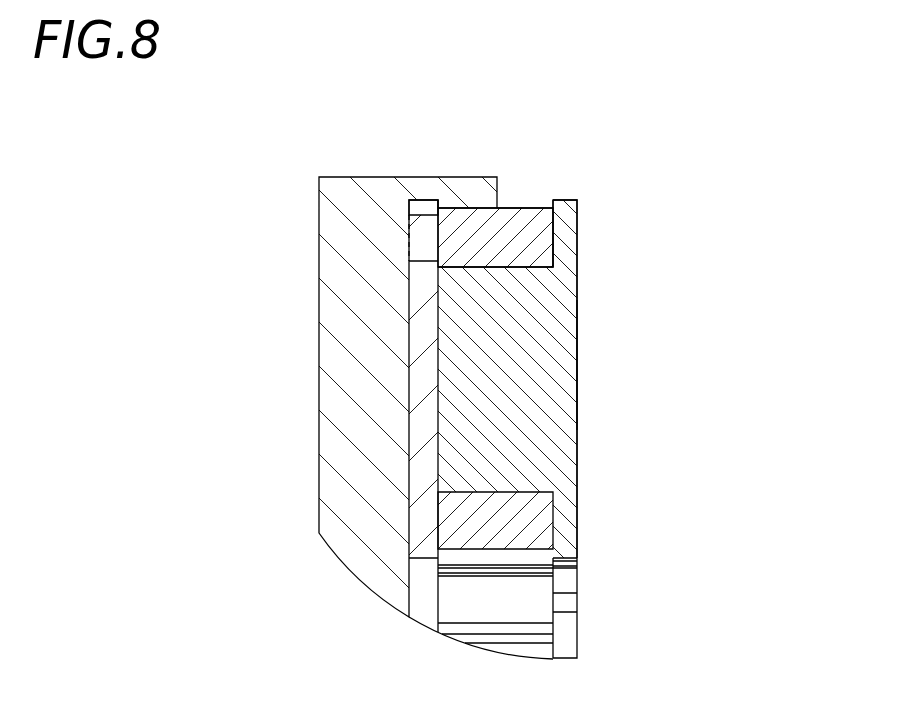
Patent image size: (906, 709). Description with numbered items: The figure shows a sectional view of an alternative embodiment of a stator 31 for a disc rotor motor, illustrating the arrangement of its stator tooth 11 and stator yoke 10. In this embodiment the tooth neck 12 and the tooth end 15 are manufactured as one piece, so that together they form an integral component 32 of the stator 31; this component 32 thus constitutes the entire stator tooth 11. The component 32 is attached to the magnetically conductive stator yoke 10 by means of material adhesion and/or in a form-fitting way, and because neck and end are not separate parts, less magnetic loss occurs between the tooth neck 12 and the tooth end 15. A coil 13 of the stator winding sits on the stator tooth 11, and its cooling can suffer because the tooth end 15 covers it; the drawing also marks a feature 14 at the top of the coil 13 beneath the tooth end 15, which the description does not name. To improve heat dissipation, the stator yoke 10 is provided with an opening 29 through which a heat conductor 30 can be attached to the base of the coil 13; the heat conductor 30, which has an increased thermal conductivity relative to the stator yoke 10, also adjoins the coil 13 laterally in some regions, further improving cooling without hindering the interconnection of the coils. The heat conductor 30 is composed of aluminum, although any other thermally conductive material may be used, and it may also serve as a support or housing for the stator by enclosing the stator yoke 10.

The stator yoke 10 is at (422, 612).
The stator tooth 11 is at (510, 495).
The tooth neck 12 is at (480, 358).
The coil 13 is at (512, 237).
The magnet top surface 14 is at (537, 209).
The tooth end 15 is at (560, 328).
The opening 29 is at (418, 213).
The heat conductor 30 is at (362, 288).
The stator 31 is at (662, 153).
The integral component 32 is at (578, 365).